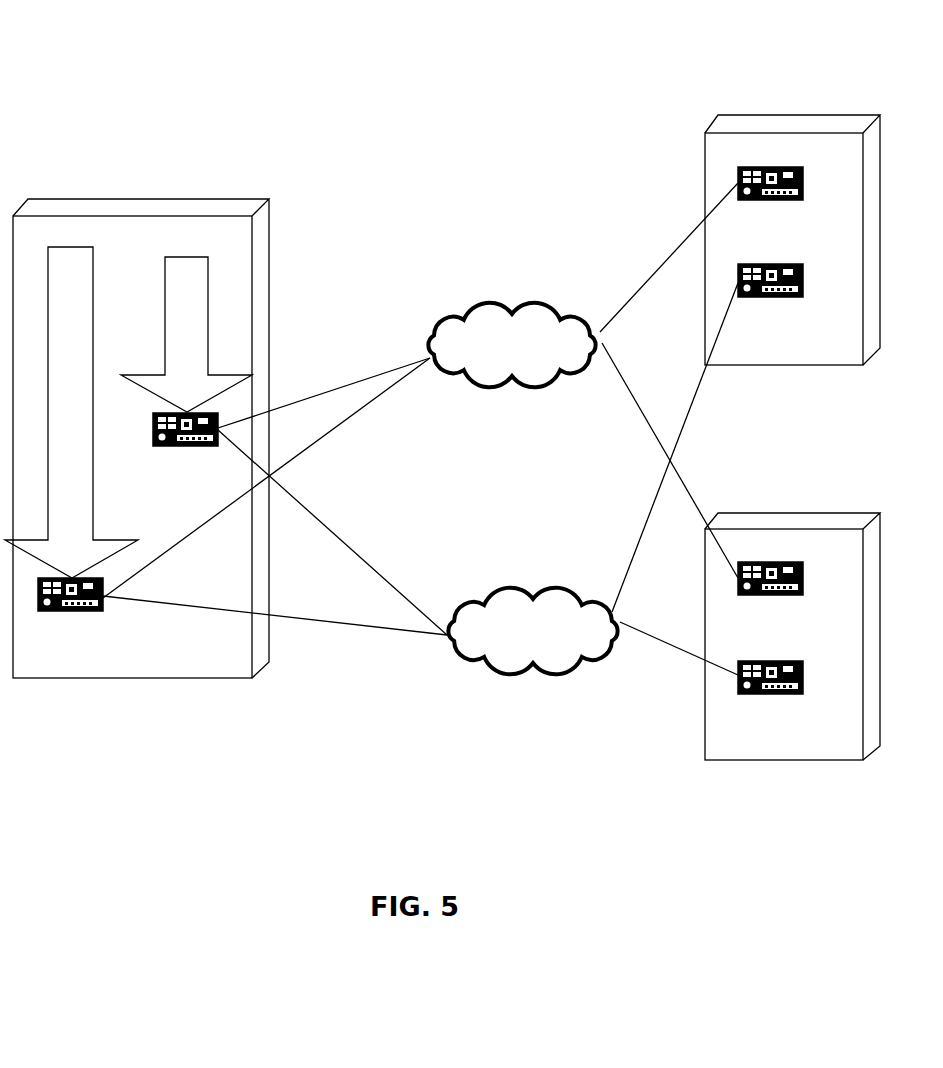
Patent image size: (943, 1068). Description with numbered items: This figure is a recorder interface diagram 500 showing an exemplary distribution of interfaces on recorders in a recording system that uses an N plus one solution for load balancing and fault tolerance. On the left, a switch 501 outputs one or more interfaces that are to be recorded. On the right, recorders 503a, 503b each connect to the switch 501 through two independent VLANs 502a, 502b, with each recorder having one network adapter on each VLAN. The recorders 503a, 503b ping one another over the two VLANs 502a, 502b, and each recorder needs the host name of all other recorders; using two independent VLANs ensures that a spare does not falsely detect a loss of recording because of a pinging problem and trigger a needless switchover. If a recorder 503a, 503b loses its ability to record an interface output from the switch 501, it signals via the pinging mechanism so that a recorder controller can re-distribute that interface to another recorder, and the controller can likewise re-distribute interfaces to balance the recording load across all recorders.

The network system 500 is at (153, 35).
The switch 501 is at (208, 665).
The VLAN 502a is at (538, 356).
The VLAN 502b is at (557, 640).
The recorder 503a is at (772, 358).
The recorder 503b is at (772, 751).